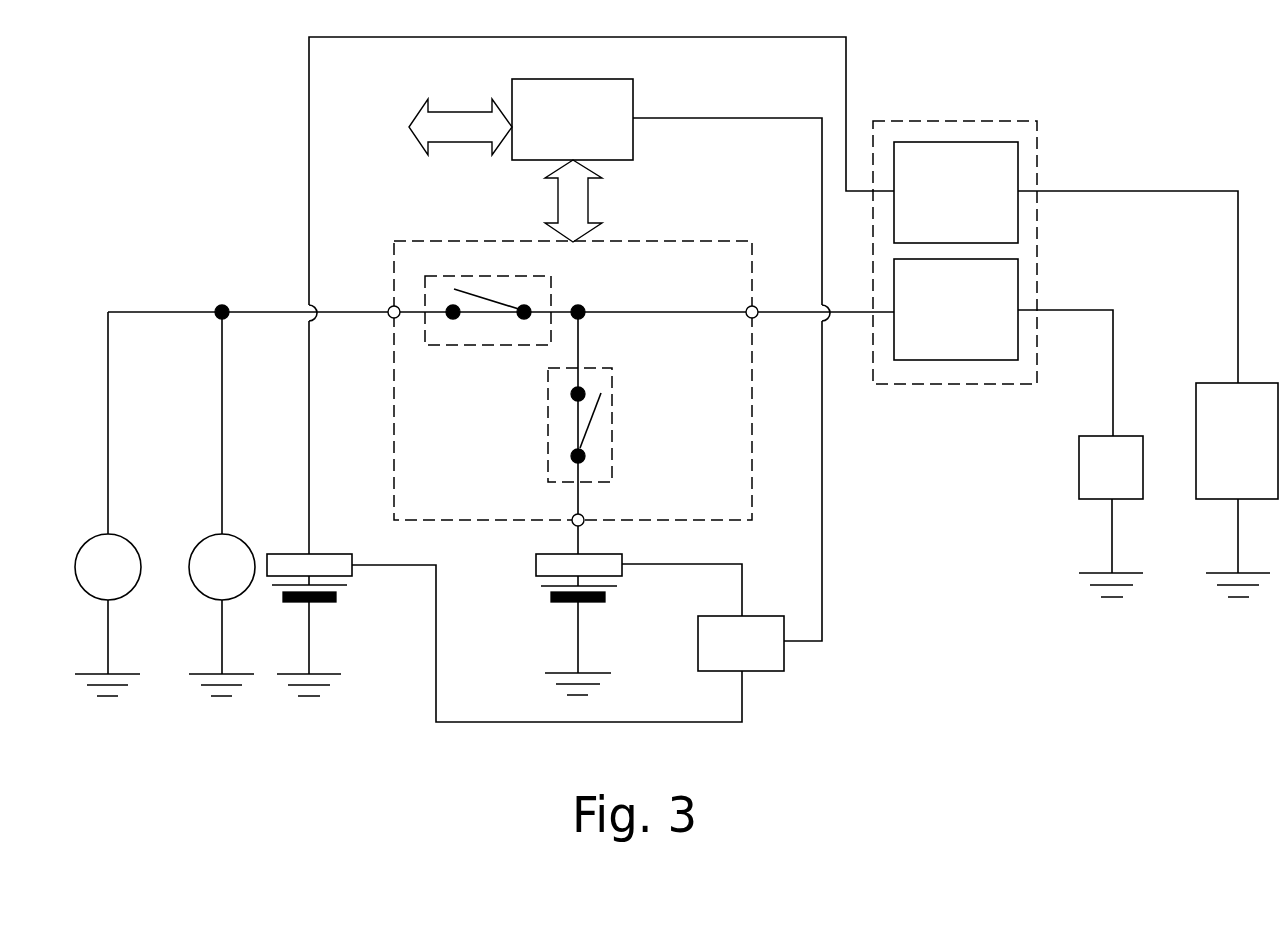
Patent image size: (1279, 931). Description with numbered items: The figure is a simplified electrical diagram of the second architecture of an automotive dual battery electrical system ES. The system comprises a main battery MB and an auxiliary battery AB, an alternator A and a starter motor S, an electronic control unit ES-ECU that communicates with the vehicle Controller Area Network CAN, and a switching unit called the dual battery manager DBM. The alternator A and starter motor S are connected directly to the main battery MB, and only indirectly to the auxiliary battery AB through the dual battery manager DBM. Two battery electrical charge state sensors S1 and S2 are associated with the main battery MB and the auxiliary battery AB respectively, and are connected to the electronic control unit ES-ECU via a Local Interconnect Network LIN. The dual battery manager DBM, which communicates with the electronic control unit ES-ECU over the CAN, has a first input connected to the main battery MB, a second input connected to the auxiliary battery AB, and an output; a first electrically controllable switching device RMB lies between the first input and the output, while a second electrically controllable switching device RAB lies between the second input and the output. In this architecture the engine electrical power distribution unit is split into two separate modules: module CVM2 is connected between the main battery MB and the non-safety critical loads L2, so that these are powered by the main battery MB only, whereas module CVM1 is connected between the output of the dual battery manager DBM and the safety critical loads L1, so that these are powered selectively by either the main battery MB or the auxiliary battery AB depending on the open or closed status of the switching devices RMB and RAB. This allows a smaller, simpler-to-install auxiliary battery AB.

The automotive dual battery electrical system ES is at (501, 295).
The electronic control unit ES-ECU is at (671, 360).
The Controller Area Network CAN is at (505, 170).
The dual battery manager DBM is at (486, 397).
The first electrically controllable switching device RMB is at (488, 324).
The second electrically controllable switching device RAB is at (604, 425).
The alternator A is at (108, 615).
The starter motor S is at (222, 504).
The battery electrical charge state sensor S1 is at (504, 623).
The main battery MB is at (329, 636).
The battery electrical charge state sensor S2 is at (639, 572).
The auxiliary battery AB is at (595, 635).
The Local Interconnect Network LIN is at (741, 643).
The electrical power distribution module CVM1 is at (1003, 347).
The electrical power distribution module CVM2 is at (1055, 252).
The safety critical electrical loads L1 is at (1111, 516).
The non-safety critical electrical loads L2 is at (1237, 490).